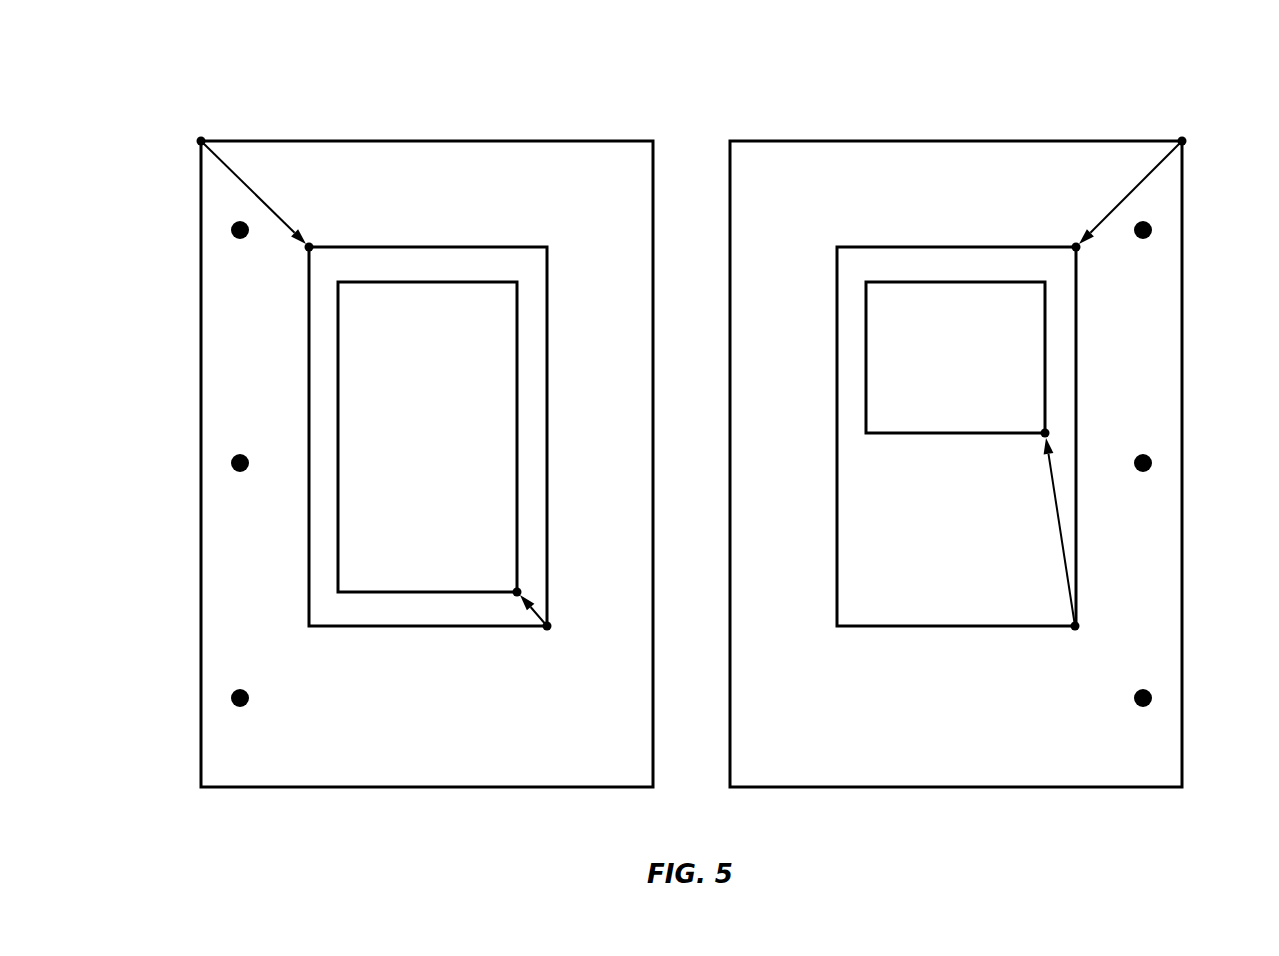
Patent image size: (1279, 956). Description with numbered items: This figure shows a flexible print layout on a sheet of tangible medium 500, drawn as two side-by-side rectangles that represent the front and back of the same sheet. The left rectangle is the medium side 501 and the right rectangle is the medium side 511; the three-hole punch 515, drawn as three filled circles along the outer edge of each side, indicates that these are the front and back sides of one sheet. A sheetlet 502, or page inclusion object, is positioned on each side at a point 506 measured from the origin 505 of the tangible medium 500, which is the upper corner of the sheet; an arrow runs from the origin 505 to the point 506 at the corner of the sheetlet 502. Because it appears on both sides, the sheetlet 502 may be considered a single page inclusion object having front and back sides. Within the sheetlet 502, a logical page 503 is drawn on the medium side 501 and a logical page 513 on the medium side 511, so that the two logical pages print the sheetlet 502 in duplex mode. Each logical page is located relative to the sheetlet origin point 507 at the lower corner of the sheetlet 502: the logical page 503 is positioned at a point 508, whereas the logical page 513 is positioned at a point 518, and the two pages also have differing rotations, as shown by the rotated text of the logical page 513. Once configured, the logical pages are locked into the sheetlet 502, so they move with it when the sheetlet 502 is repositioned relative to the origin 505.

The tangible medium 500 is at (1106, 58).
The medium side 501 is at (446, 767).
The sheetlet 502 is at (547, 330).
The logical page 503 is at (446, 476).
The origin 505 is at (201, 141).
The point 506 is at (309, 247).
The sheetlet origin point 507 is at (547, 626).
The point 508 is at (517, 592).
The medium side 511 is at (976, 767).
The logical page 513 is at (1027, 367).
The three-hole punch 515 is at (240, 690).
The point 518 is at (1045, 433).